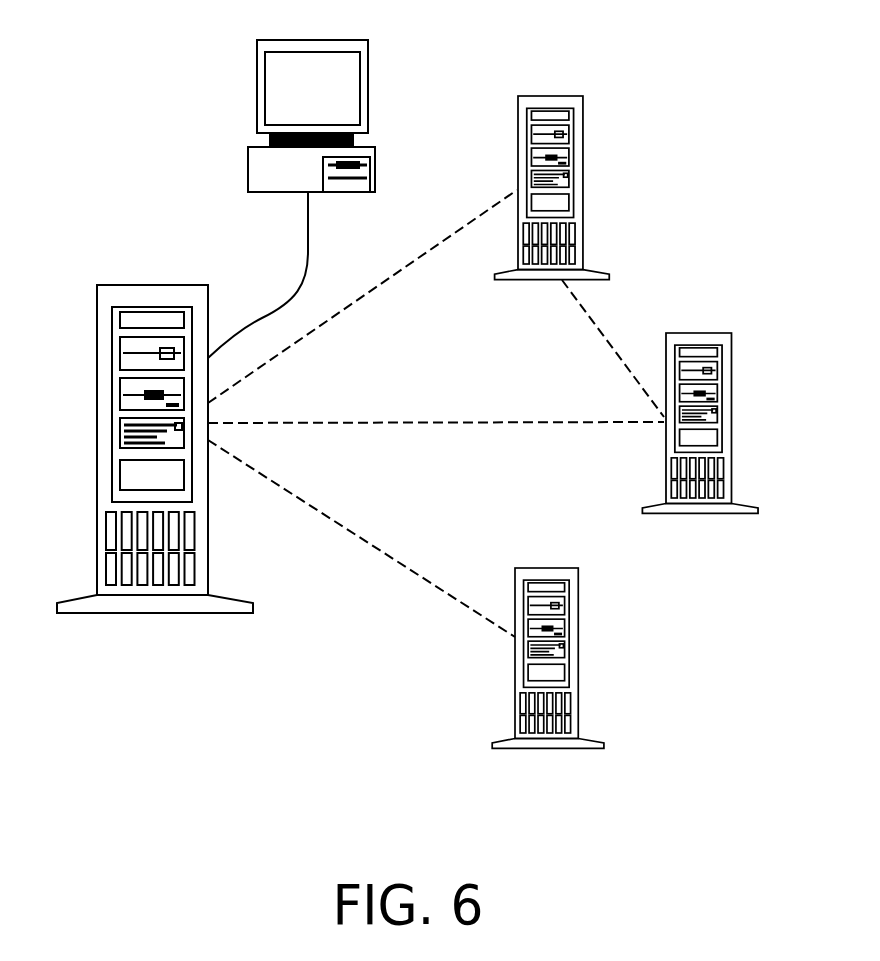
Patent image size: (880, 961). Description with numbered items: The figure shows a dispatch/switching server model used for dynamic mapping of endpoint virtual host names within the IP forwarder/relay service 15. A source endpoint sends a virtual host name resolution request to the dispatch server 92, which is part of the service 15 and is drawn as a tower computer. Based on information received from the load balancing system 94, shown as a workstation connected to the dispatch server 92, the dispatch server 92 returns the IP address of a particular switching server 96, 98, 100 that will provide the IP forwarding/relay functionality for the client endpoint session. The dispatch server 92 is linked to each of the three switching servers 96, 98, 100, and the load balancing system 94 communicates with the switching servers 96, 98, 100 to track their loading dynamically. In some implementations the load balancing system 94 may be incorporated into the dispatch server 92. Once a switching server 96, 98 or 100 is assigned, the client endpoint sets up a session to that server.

The service 15 is at (196, 116).
The dispatch server 92 is at (118, 613).
The load balancing system 94 is at (368, 97).
The switching server 96 is at (583, 168).
The switching server 98 is at (732, 412).
The switching server 100 is at (578, 642).